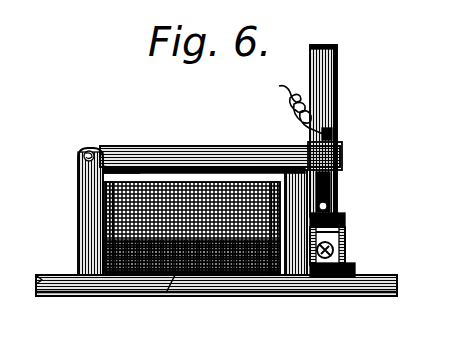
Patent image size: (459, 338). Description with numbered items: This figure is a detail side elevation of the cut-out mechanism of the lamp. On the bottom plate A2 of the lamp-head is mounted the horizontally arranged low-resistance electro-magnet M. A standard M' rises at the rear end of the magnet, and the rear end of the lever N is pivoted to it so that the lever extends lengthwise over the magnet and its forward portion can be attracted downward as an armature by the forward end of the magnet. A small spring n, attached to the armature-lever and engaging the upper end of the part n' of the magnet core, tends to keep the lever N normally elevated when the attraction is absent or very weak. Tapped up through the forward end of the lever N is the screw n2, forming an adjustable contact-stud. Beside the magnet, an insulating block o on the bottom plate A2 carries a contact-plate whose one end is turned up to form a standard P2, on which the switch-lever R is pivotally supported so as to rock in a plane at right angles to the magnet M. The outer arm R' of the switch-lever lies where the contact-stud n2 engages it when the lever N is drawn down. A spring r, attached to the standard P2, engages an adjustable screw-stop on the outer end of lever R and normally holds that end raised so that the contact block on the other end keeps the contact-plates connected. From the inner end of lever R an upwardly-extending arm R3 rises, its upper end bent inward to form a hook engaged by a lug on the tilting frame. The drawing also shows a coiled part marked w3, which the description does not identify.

The armature-lever N is at (183, 155).
The small spring n is at (203, 149).
The upwardly-extending arm R3 is at (335, 131).
The spring w3 is at (287, 98).
The switch-lever R is at (342, 148).
The screw contact-stud n2 is at (337, 190).
The outer arm of switch-lever R' is at (345, 213).
The standard P2 is at (347, 235).
The spring r is at (347, 246).
The insulating block or plate o is at (357, 268).
The standard M' is at (68, 211).
The low-resistance electro-magnet M is at (154, 301).
The bottom plate of the head A2 is at (223, 297).
The part of the magnet core n' is at (286, 248).